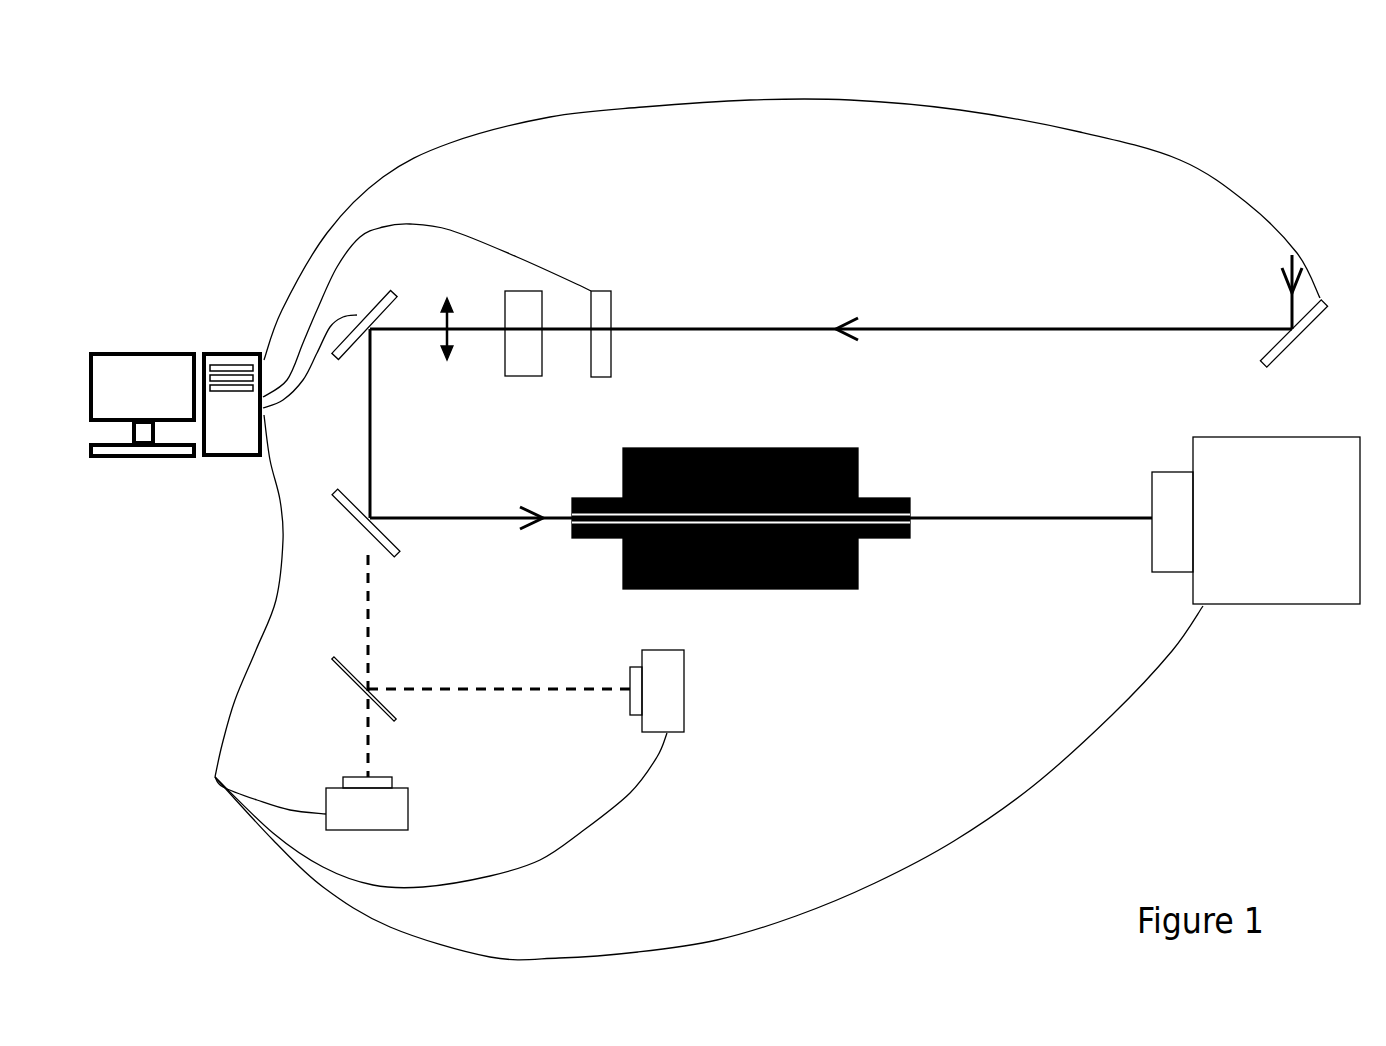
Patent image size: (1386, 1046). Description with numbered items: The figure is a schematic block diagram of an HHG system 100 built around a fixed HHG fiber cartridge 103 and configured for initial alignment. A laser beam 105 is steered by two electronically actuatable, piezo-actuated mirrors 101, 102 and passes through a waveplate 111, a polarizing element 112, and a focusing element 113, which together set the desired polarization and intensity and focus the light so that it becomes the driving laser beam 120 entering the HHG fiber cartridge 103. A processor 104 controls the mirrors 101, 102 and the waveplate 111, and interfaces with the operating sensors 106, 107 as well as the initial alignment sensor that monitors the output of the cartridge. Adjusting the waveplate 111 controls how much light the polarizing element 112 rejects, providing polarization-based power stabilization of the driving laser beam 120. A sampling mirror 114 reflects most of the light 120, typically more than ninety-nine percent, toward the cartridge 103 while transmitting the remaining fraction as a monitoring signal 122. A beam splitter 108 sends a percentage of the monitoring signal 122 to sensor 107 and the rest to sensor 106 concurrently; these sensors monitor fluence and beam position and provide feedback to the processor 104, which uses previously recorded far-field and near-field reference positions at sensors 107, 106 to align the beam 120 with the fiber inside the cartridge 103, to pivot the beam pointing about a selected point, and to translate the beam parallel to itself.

The HHG system 100 is at (817, 72).
The electronically actuatable mirror 101 is at (1309, 337).
The electronically actuatable mirror 102 is at (344, 329).
The HHG fiber cartridge 103 is at (741, 499).
The processor 104 is at (175, 381).
The laser beam 105 is at (836, 297).
The sensor 106 is at (311, 821).
The sensor 107 is at (465, 752).
The beam splitter 108 is at (461, 689).
The waveplate 111 is at (455, 320).
The polarizing element 112 is at (526, 352).
The focusing element 113 is at (453, 345).
The sampling mirror 114 is at (353, 532).
The driving laser beam 120 is at (402, 423).
The monitoring signal 122 is at (396, 666).